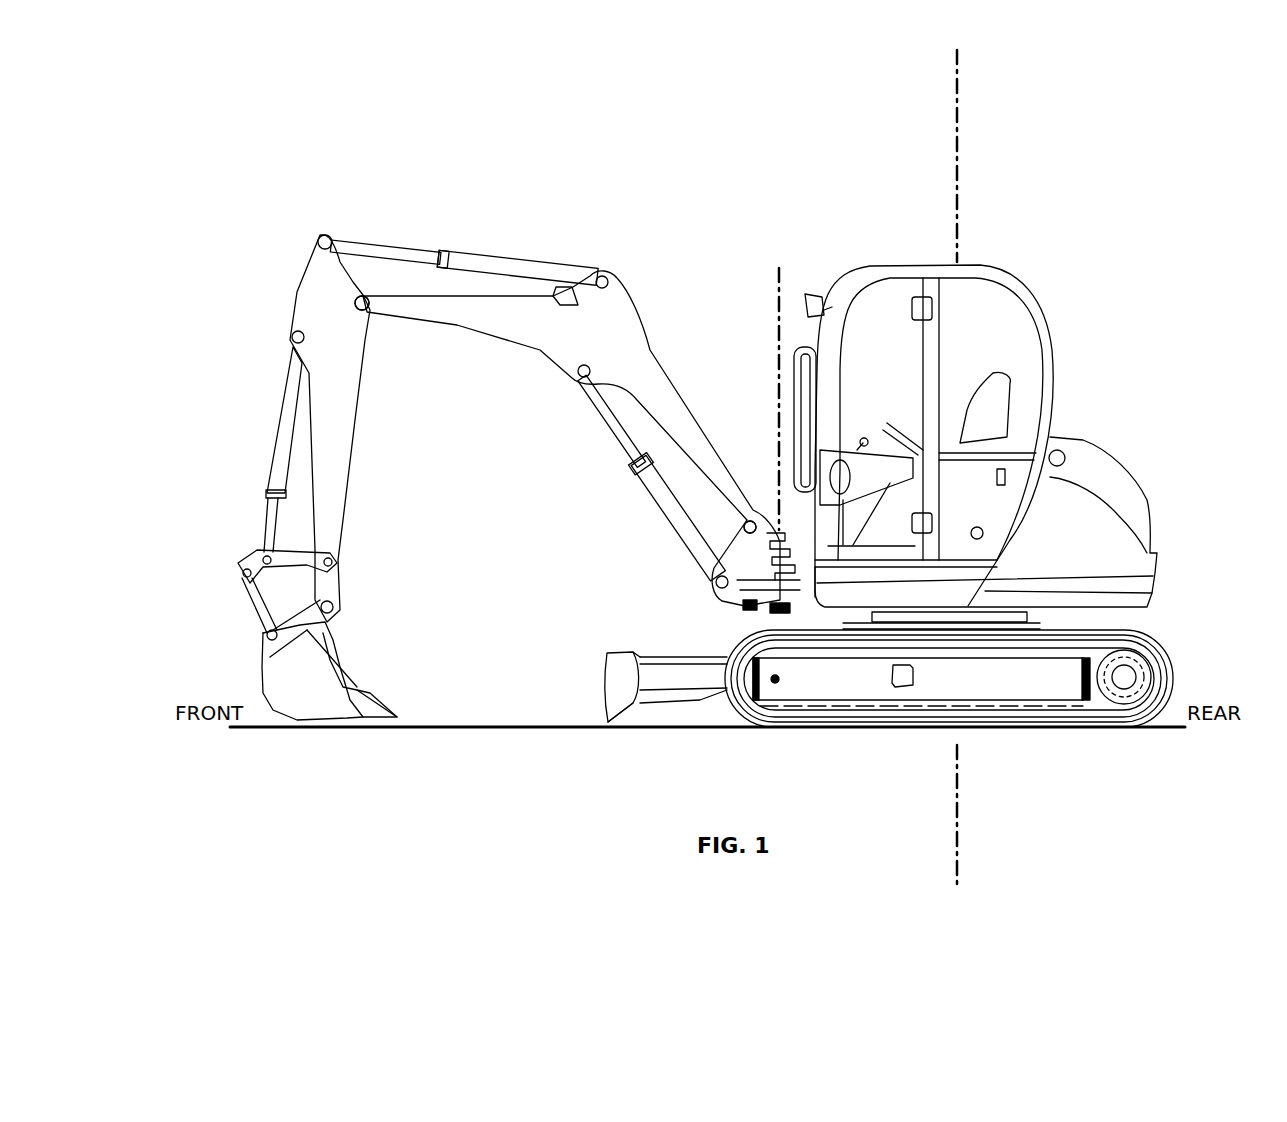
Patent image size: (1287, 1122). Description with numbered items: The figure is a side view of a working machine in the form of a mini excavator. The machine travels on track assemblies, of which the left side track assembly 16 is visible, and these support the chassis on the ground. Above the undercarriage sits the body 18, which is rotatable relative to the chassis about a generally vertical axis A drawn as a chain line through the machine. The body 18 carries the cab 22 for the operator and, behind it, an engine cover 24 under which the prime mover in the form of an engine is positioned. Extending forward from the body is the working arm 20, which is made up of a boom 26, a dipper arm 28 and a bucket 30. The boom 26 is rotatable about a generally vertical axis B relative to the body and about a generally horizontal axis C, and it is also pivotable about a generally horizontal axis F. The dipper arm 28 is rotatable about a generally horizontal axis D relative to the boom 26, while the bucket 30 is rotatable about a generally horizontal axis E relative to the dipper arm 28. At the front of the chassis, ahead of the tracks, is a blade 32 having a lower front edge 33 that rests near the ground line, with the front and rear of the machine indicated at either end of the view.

The left side track assembly 16 is at (790, 723).
The body 18 is at (1107, 457).
The working arm 20 is at (572, 222).
The cab 22 is at (965, 255).
The engine cover 24 is at (1133, 498).
The boom 26 is at (571, 438).
The dipper arm 28 is at (317, 428).
The bucket 30 is at (329, 671).
The blade 32 is at (617, 663).
The lower front edge 33 is at (603, 720).
The generally vertical axis A is at (958, 103).
The generally vertical axis B is at (777, 315).
The generally horizontal axis C is at (757, 517).
The generally horizontal axis D is at (362, 306).
The generally horizontal axis E is at (332, 612).
The generally horizontal axis F is at (775, 679).